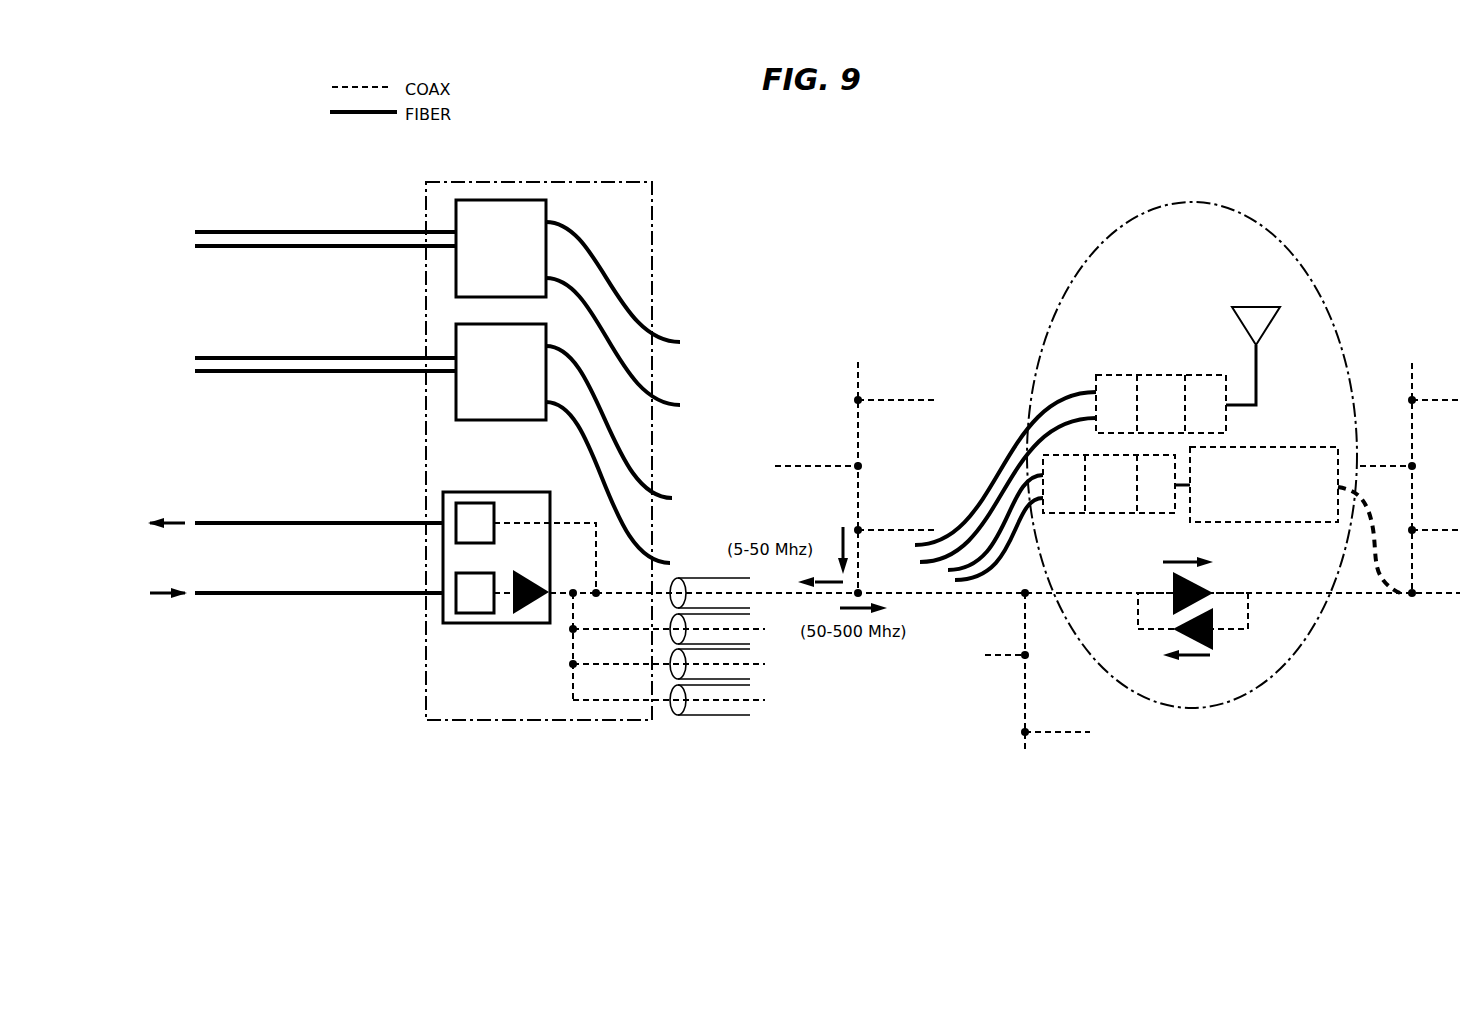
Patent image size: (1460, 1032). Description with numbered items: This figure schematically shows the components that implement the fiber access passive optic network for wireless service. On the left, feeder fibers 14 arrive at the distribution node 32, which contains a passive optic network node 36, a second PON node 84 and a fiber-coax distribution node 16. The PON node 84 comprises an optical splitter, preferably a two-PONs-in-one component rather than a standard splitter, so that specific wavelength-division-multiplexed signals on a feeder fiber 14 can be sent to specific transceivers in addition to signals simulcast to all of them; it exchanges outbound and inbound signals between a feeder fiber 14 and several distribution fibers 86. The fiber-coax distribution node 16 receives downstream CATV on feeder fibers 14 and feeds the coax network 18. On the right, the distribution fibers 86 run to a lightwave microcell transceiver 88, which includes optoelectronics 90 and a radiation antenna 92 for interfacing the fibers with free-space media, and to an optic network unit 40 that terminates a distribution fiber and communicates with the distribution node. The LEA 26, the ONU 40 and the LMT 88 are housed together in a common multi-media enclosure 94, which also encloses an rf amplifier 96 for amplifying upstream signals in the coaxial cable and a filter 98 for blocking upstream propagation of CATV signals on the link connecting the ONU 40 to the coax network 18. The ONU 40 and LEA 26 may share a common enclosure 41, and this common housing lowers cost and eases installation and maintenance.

The feeder fiber 14 is at (292, 231).
The fiber-coax distribution node 16 is at (536, 492).
The coax network 18 is at (772, 710).
The LEA 26 is at (1203, 586).
The distribution node 32 is at (628, 195).
The passive optic network (PON) node 36 is at (456, 290).
The optic network unit (ONU) 40 is at (1114, 530).
The common enclosure 41 is at (1378, 520).
The second PON node 84 is at (480, 421).
The distribution fibers 86 is at (664, 338).
The lightwave microcell transceiver (LMT) 88 is at (1158, 375).
The optoelectronics 90 is at (1115, 375).
The radiation antenna 92 is at (1258, 368).
The common multi-media enclosure 94 is at (1260, 220).
The rf amplifier 96 is at (1213, 638).
The filter 98 is at (1264, 436).